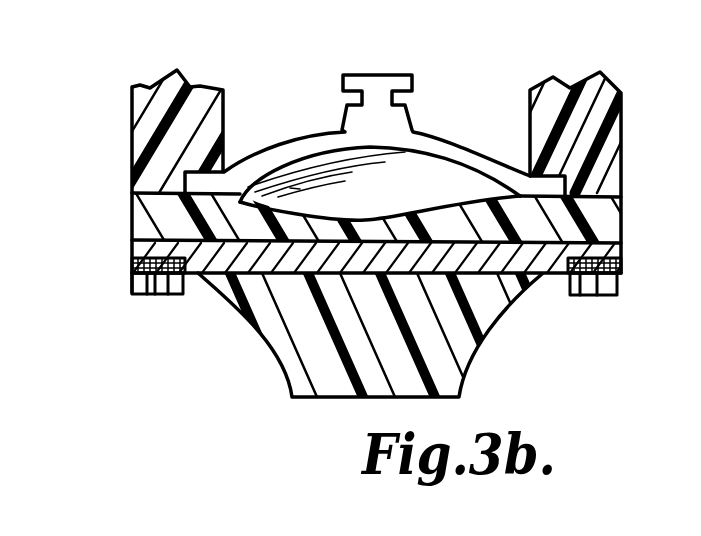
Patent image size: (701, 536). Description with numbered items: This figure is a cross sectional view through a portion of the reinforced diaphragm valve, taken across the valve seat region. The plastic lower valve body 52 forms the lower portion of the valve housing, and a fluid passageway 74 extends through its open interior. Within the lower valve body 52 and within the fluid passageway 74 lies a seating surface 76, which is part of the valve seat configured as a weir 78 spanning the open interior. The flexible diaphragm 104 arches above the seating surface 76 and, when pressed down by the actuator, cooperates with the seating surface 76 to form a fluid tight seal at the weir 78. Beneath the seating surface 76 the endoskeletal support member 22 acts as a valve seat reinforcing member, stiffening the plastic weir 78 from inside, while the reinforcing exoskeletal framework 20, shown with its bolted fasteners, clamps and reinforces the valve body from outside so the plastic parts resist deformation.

The diaphragm 104 is at (293, 142).
The seating surface 76 is at (430, 204).
The fluid passageway 74 is at (240, 202).
The weir 78 is at (363, 234).
The endoskeletal support member 22 is at (535, 265).
The lower valve body 52 is at (473, 355).
The reinforcing exoskeletal framework 20 is at (157, 294).